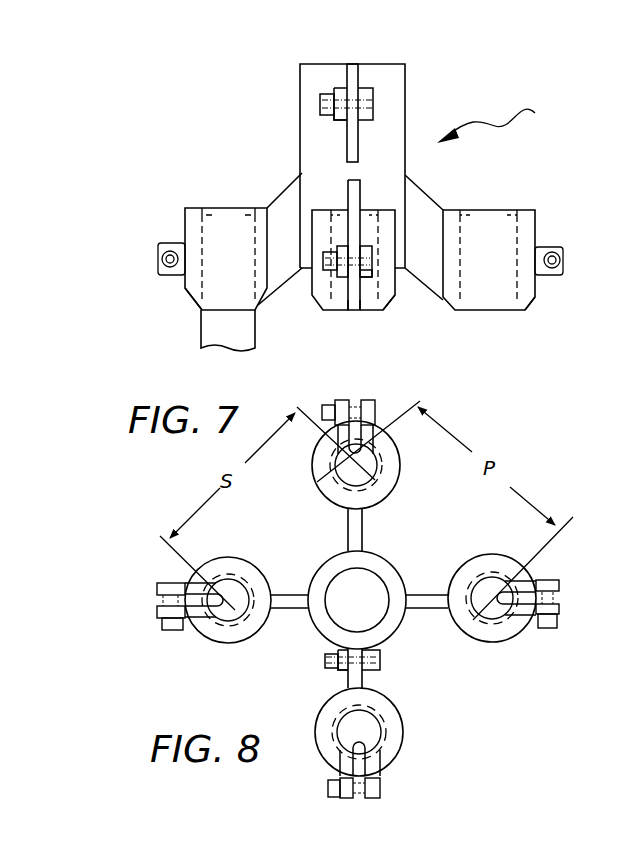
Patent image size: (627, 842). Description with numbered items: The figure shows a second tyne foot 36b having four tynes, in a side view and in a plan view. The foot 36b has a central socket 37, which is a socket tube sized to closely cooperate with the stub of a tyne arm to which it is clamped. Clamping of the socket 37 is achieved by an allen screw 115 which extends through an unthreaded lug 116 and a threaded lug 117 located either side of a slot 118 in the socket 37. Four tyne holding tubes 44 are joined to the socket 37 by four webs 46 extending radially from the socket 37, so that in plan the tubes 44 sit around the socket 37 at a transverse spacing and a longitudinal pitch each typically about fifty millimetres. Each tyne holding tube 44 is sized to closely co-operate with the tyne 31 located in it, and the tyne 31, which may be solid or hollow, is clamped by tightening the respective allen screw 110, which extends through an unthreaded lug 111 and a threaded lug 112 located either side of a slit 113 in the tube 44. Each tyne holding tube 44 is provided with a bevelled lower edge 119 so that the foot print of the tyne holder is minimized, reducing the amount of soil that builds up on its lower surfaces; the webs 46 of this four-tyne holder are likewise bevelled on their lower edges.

In FIG. 7, the tyne 31 is at (245, 338).
In FIG. 7, the foot 36b is at (505, 122).
In FIG. 7, the socket 37 is at (335, 180).
In FIG. 7, the tyne holding tube 44 is at (197, 208).
In FIG. 8, the tyne holding tube 44 is at (395, 478).
In FIG. 7, the web 46 is at (358, 192).
In FIG. 8, the web 46 is at (418, 594).
In FIG. 7, the allen screw 110 is at (160, 247).
In FIG. 8, the allen screw 110 is at (322, 410).
In FIG. 7, the unthreaded lug 111 is at (160, 272).
In FIG. 8, the unthreaded lug 111 is at (336, 401).
In FIG. 7, the threaded lug 112 is at (372, 278).
In FIG. 8, the threaded lug 112 is at (378, 405).
In FIG. 7, the slit 113 is at (355, 312).
In FIG. 8, the slit 113 is at (320, 478).
In FIG. 7, the allen screw 115 is at (320, 103).
In FIG. 8, the allen screw 115 is at (326, 668).
In FIG. 7, the unthreaded lug 116 is at (334, 118).
In FIG. 8, the unthreaded lug 116 is at (331, 672).
In FIG. 7, the threaded lug 117 is at (373, 100).
In FIG. 8, the threaded lug 117 is at (381, 670).
In FIG. 7, the slot 118 is at (354, 64).
In FIG. 8, the slot 118 is at (358, 628).
In FIG. 7, the bevelled lower edge 119 is at (195, 306).